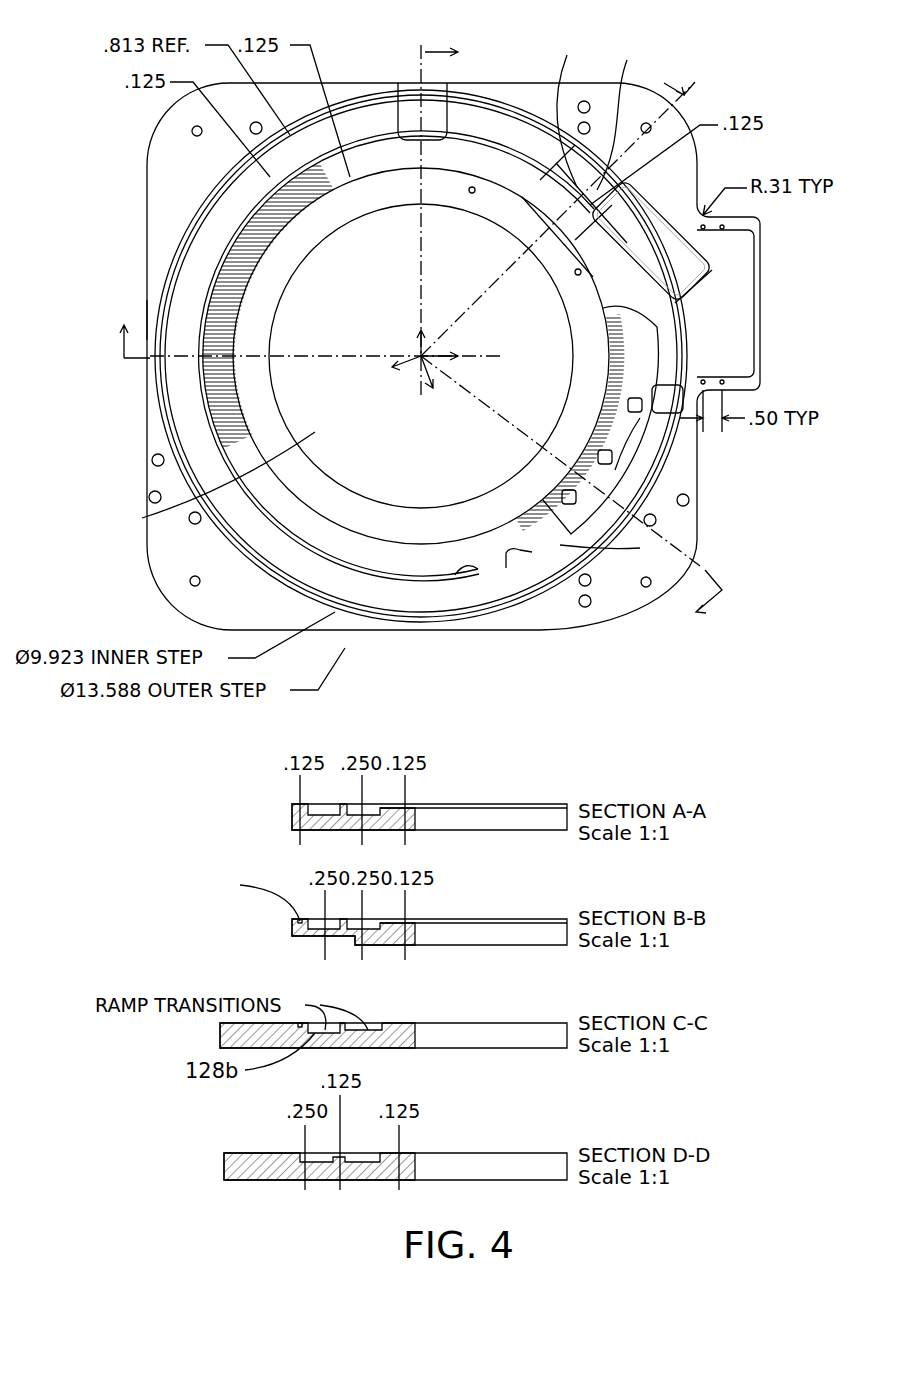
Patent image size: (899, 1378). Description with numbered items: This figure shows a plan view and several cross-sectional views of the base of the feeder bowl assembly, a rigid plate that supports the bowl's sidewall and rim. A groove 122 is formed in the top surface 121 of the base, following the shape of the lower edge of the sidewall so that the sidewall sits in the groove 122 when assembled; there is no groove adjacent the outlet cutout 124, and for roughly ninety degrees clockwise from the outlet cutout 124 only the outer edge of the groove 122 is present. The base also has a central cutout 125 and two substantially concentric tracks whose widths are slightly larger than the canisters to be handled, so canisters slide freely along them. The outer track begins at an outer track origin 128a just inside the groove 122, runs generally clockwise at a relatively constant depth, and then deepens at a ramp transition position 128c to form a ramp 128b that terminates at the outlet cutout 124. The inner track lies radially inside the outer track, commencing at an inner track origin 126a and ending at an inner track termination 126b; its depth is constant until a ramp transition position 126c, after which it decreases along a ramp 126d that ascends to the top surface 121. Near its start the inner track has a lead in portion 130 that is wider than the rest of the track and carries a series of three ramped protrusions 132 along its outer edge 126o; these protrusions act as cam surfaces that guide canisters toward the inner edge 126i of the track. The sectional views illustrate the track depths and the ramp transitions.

The top surface 121 is at (428, 325).
The groove 122 is at (153, 327).
The outlet cutout 124 is at (700, 275).
The central cutout 125 is at (315, 432).
The inner track origin 126a is at (660, 322).
The inner track termination 126b is at (698, 268).
The ramp transition position 126c is at (535, 195).
The ramp 126d is at (650, 215).
The inner edge 126i is at (600, 548).
The outer edge 126o is at (525, 580).
The outer track origin 128a is at (700, 368).
The ramp 128b is at (622, 100).
The ramp transition position 128c is at (592, 200).
The lead in portion 130 is at (625, 425).
The ramped protrusions 132 is at (652, 408).